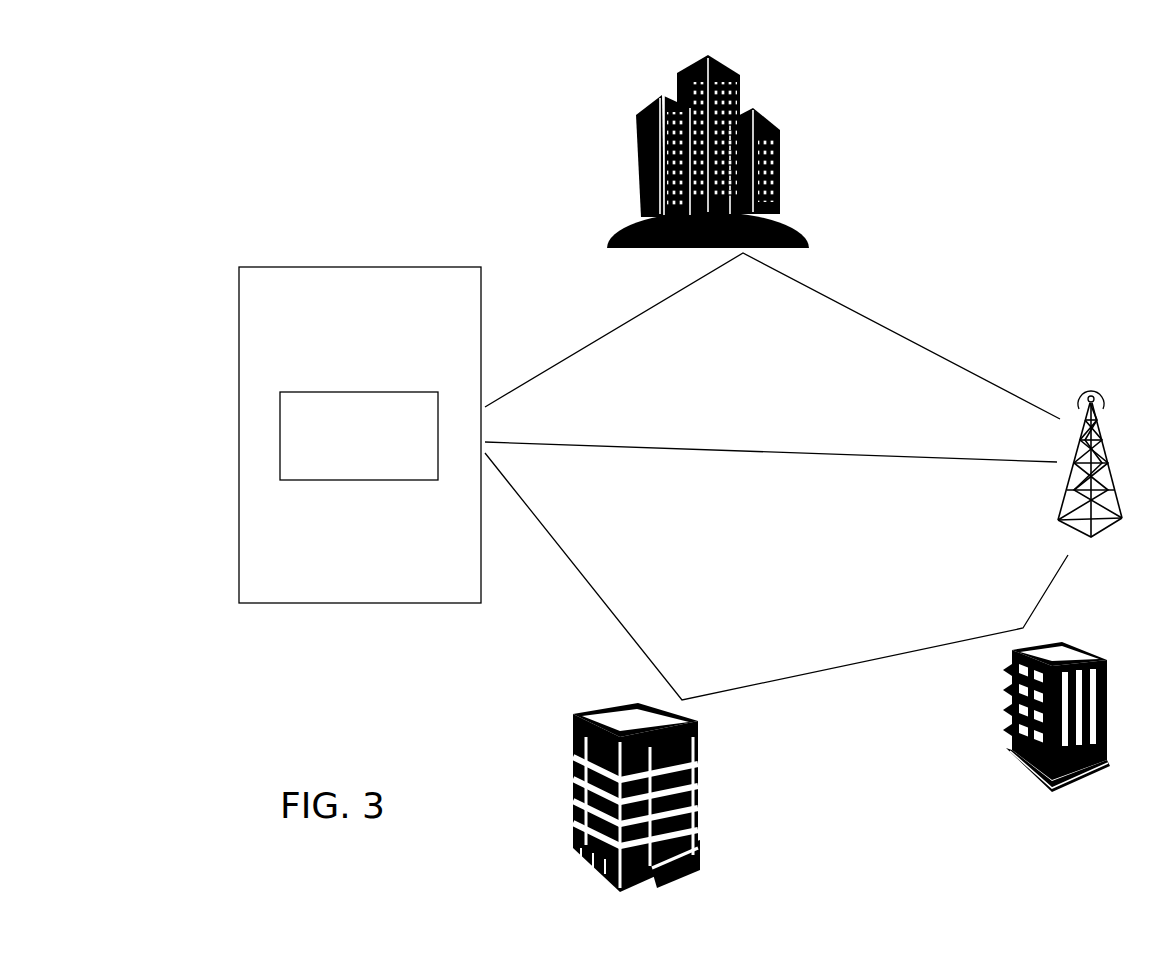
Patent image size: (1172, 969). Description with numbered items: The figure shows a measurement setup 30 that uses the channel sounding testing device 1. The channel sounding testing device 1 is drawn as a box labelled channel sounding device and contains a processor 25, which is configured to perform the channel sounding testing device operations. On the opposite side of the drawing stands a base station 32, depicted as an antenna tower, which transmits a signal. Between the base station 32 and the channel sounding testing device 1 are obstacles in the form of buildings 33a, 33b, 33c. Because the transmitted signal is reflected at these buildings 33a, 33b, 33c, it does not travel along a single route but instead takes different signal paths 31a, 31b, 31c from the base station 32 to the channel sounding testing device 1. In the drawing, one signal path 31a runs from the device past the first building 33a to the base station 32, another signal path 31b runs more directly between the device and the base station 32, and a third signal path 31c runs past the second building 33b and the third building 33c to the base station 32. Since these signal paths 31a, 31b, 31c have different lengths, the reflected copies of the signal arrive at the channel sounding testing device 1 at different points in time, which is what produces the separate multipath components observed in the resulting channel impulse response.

The channel sounding testing device 1 is at (276, 267).
The processor 25 is at (328, 480).
The measurement setup 30 is at (458, 72).
The signal path 31a is at (587, 347).
The signal path 31b is at (797, 452).
The signal path 31c is at (793, 675).
The base station 32 is at (1083, 380).
The building 33a is at (640, 107).
The building 33b is at (568, 702).
The building 33c is at (1108, 653).